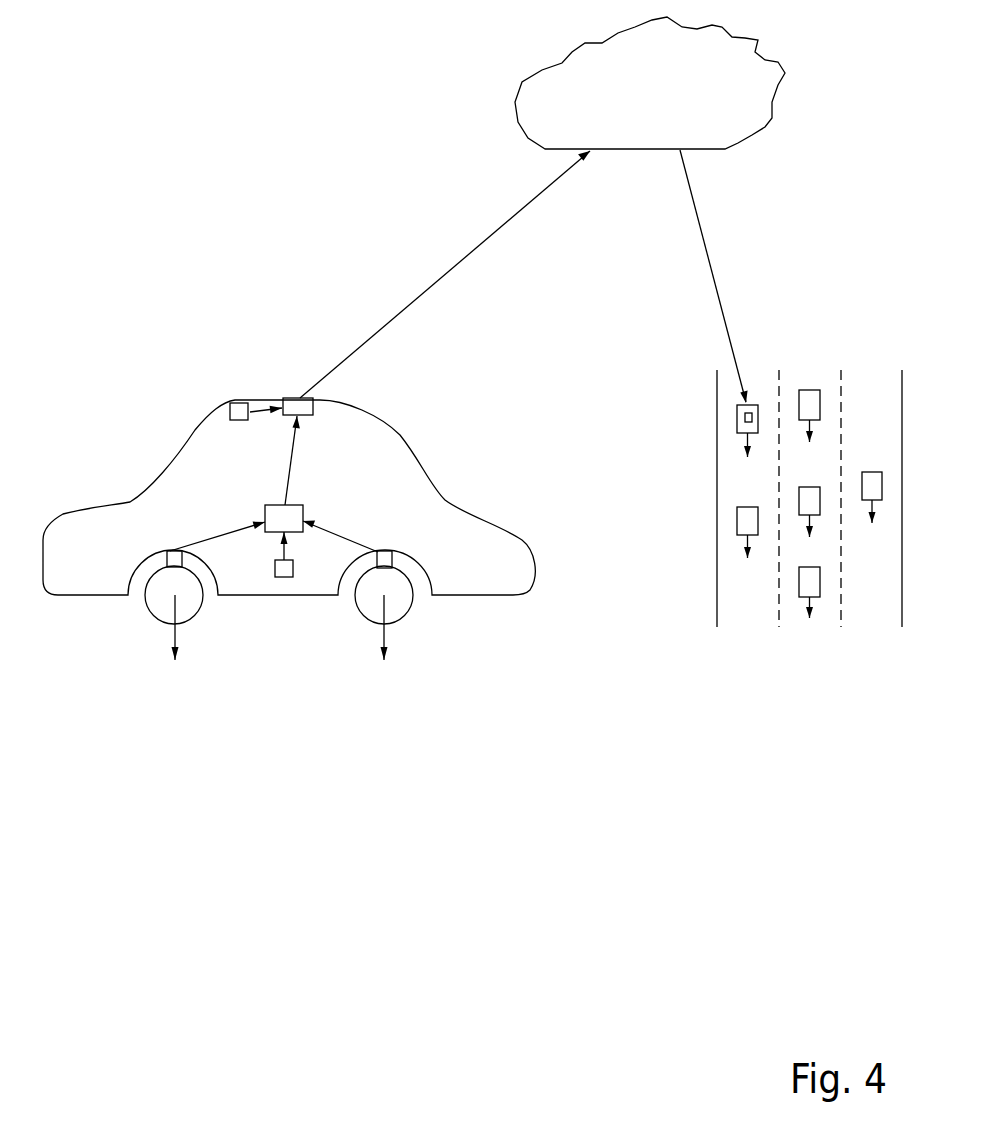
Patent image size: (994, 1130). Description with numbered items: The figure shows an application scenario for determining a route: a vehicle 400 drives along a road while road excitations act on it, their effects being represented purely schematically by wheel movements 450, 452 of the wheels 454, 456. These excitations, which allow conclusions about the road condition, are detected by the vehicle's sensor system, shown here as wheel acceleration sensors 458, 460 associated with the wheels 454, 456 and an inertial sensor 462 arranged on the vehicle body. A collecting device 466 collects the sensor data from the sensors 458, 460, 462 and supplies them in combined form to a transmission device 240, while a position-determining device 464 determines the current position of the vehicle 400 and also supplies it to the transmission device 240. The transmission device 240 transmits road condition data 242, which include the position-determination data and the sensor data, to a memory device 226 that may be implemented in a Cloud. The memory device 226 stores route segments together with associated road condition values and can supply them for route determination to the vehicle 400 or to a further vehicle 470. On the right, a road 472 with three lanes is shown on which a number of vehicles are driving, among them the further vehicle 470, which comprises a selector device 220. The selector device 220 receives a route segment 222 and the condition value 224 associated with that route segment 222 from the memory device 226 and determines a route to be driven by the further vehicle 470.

The memory device 226 is at (742, 95).
The road condition data 242 is at (462, 263).
The route segment 222 is at (793, 276).
The condition value 224 is at (715, 275).
The vehicle 400 is at (435, 488).
The wheel 454 is at (193, 620).
The wheel movement 450 is at (174, 634).
The wheel acceleration sensor 458 is at (166, 561).
The wheel 456 is at (366, 627).
The wheel movement 452 is at (387, 633).
The wheel acceleration sensor 460 is at (420, 575).
The collecting device 466 is at (264, 513).
The inertial sensor 462 is at (288, 580).
The position-determining device 464 is at (242, 408).
The transmission device 240 is at (318, 404).
The road 472 is at (717, 548).
The selector device 220 is at (663, 400).
The further vehicle 470 is at (739, 406).